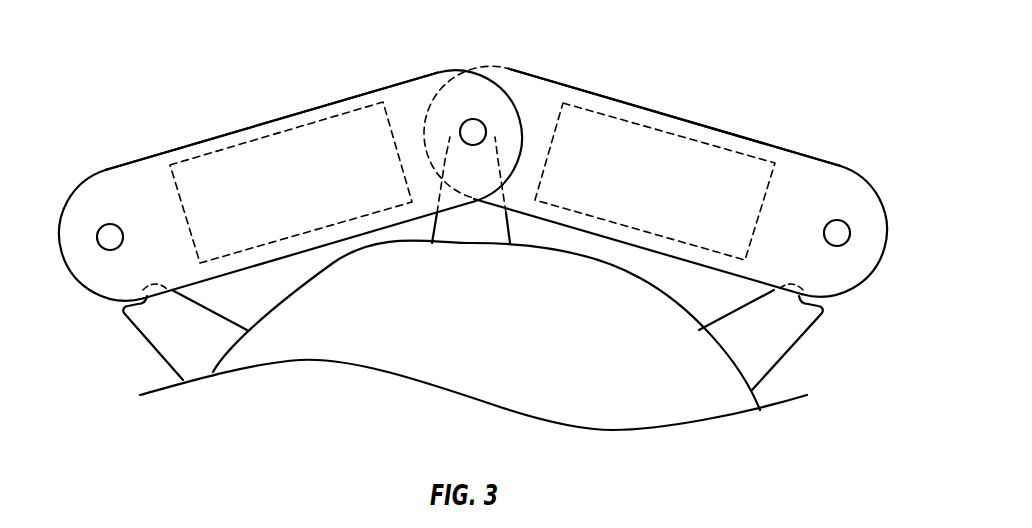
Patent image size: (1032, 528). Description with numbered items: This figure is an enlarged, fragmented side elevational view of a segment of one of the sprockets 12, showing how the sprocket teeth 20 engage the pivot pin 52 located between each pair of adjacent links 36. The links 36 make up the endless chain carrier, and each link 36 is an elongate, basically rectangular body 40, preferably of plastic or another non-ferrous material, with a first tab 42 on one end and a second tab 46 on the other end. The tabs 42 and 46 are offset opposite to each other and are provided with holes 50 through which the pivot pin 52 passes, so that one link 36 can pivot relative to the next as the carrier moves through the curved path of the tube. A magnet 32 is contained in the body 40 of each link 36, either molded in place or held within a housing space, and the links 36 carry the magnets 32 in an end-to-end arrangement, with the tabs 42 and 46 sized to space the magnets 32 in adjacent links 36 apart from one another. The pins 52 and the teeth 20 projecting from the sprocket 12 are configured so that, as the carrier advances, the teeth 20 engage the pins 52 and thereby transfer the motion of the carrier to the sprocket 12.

The sprocket 12 is at (367, 348).
The teeth 20 is at (165, 341).
The magnet 32 is at (317, 138).
The link 36 is at (242, 130).
The body 40 is at (371, 91).
The first tab 42 is at (448, 70).
The second tab 46 is at (100, 168).
The holes 50 is at (98, 246).
The pivot pin 52 is at (473, 130).